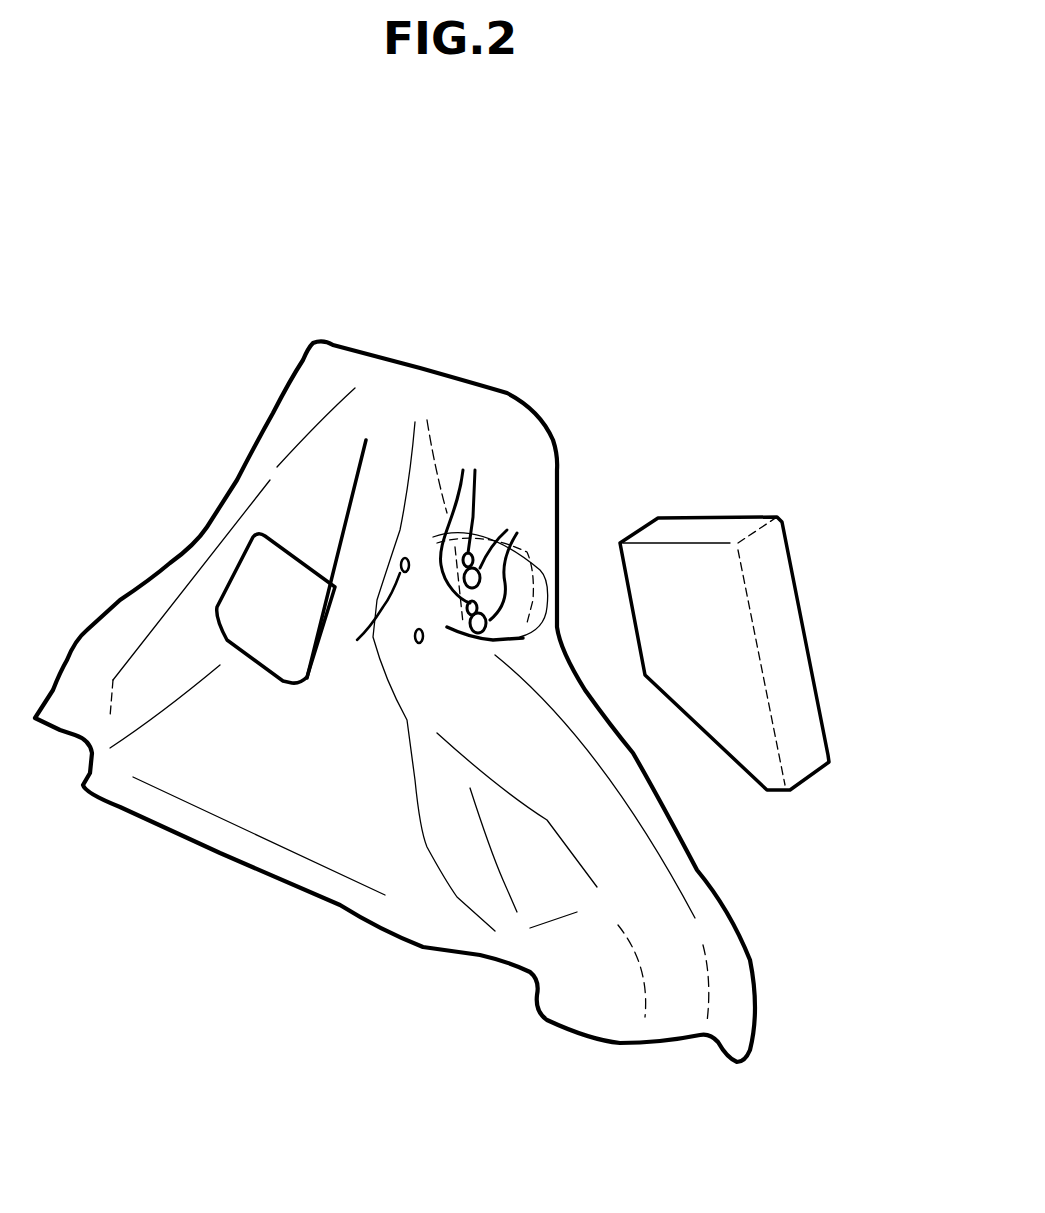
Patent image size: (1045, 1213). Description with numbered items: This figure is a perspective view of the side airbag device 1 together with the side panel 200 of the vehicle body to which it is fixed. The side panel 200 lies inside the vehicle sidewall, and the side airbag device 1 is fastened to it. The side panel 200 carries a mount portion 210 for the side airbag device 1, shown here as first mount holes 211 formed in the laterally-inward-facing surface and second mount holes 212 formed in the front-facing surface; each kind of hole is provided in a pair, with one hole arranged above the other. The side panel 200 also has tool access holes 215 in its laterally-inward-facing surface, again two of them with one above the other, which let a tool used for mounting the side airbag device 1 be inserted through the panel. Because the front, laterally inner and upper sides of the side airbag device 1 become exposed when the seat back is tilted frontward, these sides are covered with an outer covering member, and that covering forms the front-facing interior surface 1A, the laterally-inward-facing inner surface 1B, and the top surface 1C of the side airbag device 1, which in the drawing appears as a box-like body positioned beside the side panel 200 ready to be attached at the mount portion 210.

The side panel 200 is at (473, 377).
The mount portion 210 is at (479, 664).
The first mount holes 211 is at (465, 532).
The second mount holes 212 is at (413, 637).
The tool access holes 215 is at (513, 560).
The side airbag device 1 is at (735, 490).
The front-facing interior surface 1A is at (785, 623).
The laterally-inward-facing inner surface 1B is at (743, 713).
The top surface 1C is at (677, 523).